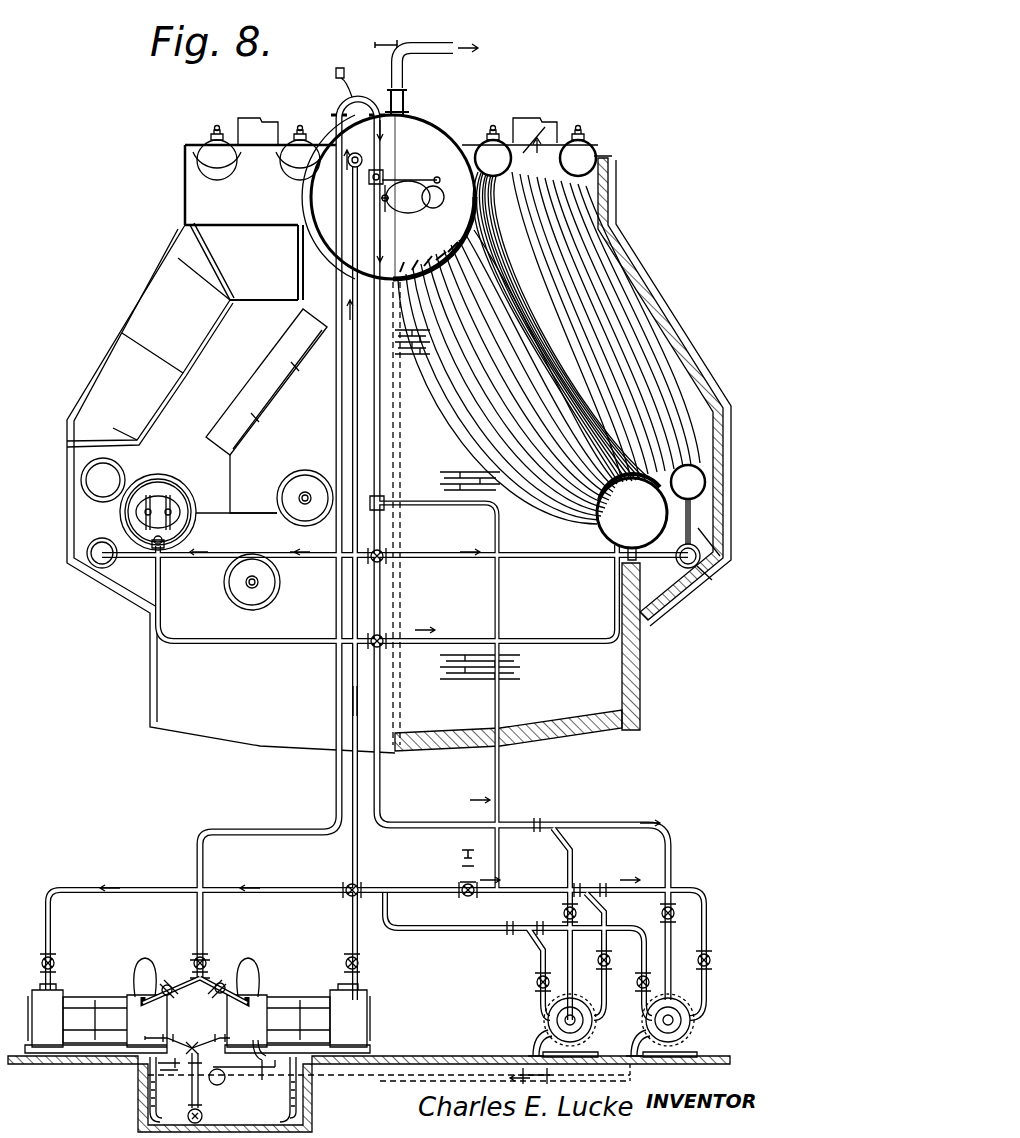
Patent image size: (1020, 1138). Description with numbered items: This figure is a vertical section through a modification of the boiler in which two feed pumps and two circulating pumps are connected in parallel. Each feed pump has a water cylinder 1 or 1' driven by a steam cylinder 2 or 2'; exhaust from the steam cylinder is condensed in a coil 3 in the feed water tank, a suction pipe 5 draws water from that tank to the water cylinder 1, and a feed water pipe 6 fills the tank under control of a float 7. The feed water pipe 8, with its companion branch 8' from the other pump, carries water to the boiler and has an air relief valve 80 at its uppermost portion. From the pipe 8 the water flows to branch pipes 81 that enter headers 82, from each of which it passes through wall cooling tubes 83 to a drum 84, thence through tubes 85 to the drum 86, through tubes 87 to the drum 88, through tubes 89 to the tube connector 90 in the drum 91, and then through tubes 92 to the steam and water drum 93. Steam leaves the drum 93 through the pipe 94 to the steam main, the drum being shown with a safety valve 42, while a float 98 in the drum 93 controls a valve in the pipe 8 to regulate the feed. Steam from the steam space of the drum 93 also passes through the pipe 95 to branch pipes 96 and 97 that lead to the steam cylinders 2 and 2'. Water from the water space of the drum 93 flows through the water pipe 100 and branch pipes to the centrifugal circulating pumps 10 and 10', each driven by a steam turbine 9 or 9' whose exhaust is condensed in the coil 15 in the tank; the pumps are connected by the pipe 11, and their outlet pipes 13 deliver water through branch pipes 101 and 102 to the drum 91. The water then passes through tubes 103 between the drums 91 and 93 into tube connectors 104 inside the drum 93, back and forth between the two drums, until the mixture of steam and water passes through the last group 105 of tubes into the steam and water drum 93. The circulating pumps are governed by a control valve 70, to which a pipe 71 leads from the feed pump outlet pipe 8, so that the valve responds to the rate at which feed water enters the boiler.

The water cylinder of feed pump 1 is at (104, 1005).
The feed pump 1' is at (297, 1005).
The steam cylinder of feed pump 2 is at (35, 1015).
The steam cylinder of second feed pump 2' is at (360, 1015).
The coil 3 is at (148, 1096).
The suction pipe 5 is at (200, 1094).
The feed water pipe 6 is at (280, 1076).
The float 7 is at (234, 1084).
The feed water pipe 8 is at (269, 892).
The pump discharge branch 8' is at (195, 977).
The steam turbine 9 is at (525, 1041).
The centrifugal pump suction 9' is at (680, 1041).
The centrifugal circulating pump 10 is at (549, 1025).
The second centrifugal circulating pump 10' is at (695, 1025).
The pipe 11 is at (571, 1000).
The outlet pipe 13 is at (430, 928).
The coil 15 is at (298, 1098).
The safety valve 42 is at (380, 50).
The control valve 70 is at (460, 880).
The pipe 71 is at (497, 704).
The air relief valve 80 is at (345, 82).
The branch pipes 81 is at (292, 560).
The headers 82 is at (108, 544).
The wall cooling tubes 83 is at (718, 446).
The drum 84 is at (596, 150).
The tubes 85 is at (590, 208).
The drum 86 is at (706, 480).
The tubes 87 is at (690, 396).
The drum 88 is at (480, 150).
The tubes 89 is at (536, 200).
The tube connector 90 is at (628, 510).
The drum 91 is at (186, 528).
The tubes 92 is at (665, 350).
The steam and water drum 93 is at (428, 130).
The pipe 94 is at (455, 52).
The pipe 95 is at (347, 272).
The branch pipe 96 is at (316, 890).
The branch pipe 97 is at (352, 930).
The float 98 is at (408, 178).
The water pipe 100 is at (390, 798).
The branch pipe 101 is at (522, 645).
The branch pipe 102 is at (285, 645).
The tubes 103 is at (520, 340).
The tube connectors 104 is at (458, 232).
The last group of tubes 105 is at (500, 437).